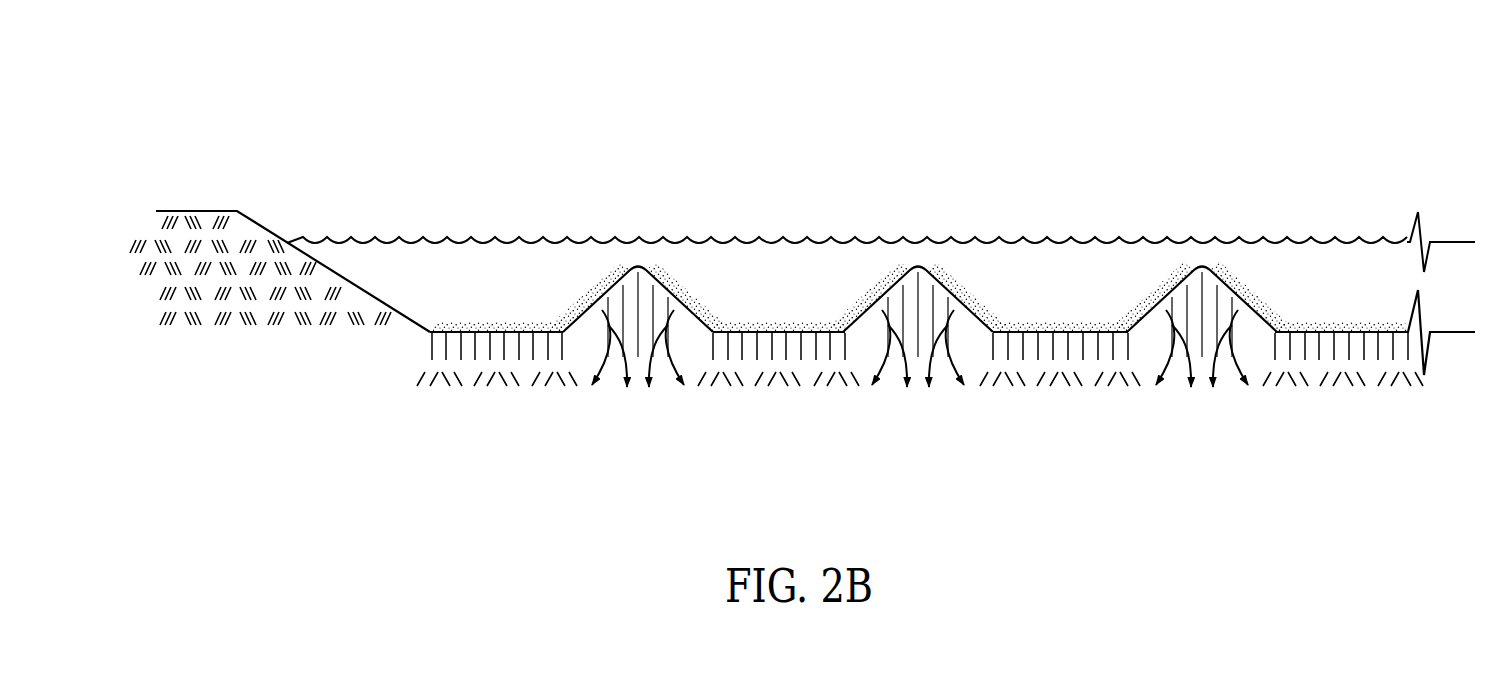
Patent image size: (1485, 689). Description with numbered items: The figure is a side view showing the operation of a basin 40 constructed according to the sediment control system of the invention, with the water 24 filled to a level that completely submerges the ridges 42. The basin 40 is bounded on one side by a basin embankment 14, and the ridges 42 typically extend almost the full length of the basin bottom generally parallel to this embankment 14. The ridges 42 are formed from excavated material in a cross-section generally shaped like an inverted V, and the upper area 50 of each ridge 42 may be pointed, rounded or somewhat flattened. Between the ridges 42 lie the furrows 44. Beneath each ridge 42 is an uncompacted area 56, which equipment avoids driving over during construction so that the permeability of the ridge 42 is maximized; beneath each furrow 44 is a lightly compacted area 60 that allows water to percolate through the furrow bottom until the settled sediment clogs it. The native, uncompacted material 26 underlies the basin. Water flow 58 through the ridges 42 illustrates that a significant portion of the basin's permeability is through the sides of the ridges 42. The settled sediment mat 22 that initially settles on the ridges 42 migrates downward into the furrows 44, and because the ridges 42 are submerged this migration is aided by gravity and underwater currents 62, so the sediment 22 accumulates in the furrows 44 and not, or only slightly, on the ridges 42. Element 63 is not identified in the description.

The basin embankment 14 is at (262, 318).
The settled sediment (mat) 22 is at (1320, 323).
The water 24 is at (497, 247).
The native/uncompacted material 26 is at (495, 385).
The basin 40 is at (1132, 128).
The ridges 42 is at (1222, 270).
The furrows 44 is at (1040, 265).
The upper area of ridges 50 is at (673, 283).
The uncompacted area under ridge 56 is at (1150, 335).
The water flow through furrow bottom 58 is at (920, 362).
The lightly compacted area under furrow 60 is at (430, 352).
The gravity and underwater currents 62 is at (866, 286).
The sediment deposit on mound 63 is at (970, 298).